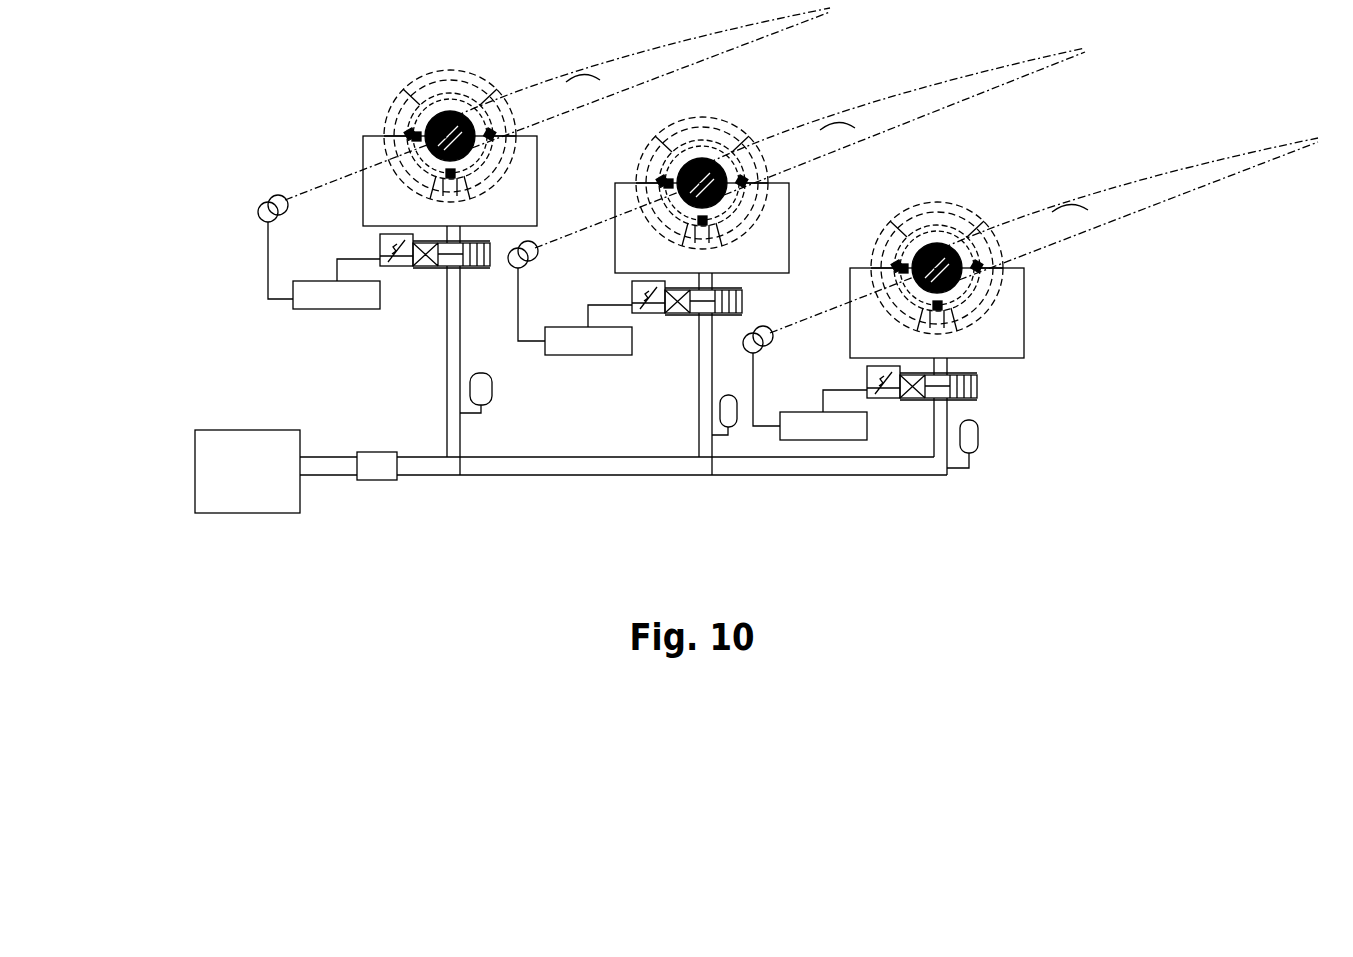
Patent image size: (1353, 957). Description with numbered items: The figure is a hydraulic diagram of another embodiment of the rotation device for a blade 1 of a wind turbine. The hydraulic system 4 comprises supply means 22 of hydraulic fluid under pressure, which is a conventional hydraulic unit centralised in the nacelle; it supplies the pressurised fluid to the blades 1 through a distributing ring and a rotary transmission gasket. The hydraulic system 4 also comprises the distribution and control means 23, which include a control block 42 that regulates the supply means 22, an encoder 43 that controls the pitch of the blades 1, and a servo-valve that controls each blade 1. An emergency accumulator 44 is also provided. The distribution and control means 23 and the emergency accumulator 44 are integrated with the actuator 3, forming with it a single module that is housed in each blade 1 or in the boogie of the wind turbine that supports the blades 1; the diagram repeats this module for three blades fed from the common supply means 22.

The blade 1 is at (1153, 188).
The actuator 3 is at (1014, 311).
The hydraulic system 4 is at (470, 518).
The supply means 22 is at (185, 398).
The distribution and control means 23 is at (228, 246).
The control block 42 is at (310, 310).
The encoder 43 is at (267, 201).
The emergency accumulator 44 is at (470, 390).